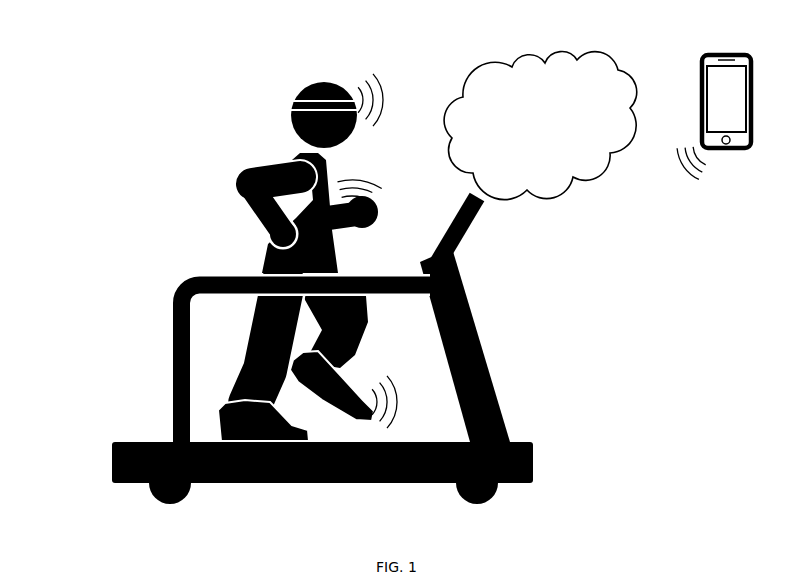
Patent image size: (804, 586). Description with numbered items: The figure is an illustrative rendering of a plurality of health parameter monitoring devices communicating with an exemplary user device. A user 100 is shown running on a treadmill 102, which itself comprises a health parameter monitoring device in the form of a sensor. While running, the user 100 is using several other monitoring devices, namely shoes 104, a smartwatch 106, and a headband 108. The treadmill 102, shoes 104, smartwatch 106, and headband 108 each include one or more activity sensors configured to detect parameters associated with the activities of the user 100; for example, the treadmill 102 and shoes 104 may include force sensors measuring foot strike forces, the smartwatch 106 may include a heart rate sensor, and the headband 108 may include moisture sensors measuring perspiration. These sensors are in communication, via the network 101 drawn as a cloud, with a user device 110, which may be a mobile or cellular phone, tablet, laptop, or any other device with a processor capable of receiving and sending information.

The user 100 is at (293, 160).
The network 101 is at (540, 126).
The treadmill 102 is at (115, 443).
The shoes 104 is at (327, 403).
The smartwatch 106 is at (366, 232).
The headband 108 is at (300, 92).
The user device 110 is at (695, 87).